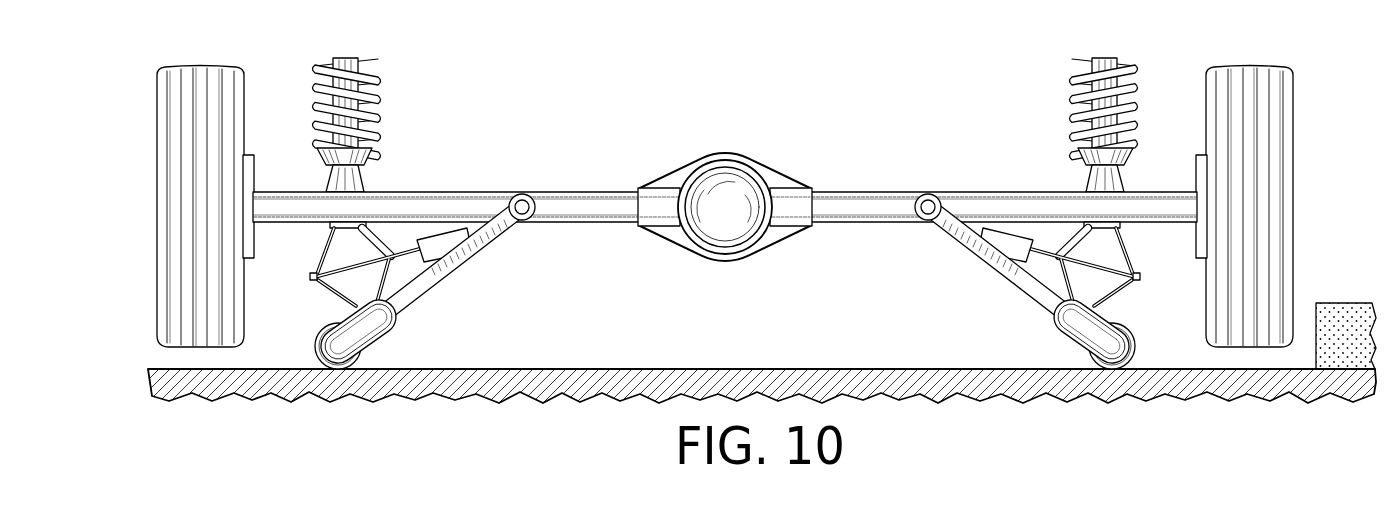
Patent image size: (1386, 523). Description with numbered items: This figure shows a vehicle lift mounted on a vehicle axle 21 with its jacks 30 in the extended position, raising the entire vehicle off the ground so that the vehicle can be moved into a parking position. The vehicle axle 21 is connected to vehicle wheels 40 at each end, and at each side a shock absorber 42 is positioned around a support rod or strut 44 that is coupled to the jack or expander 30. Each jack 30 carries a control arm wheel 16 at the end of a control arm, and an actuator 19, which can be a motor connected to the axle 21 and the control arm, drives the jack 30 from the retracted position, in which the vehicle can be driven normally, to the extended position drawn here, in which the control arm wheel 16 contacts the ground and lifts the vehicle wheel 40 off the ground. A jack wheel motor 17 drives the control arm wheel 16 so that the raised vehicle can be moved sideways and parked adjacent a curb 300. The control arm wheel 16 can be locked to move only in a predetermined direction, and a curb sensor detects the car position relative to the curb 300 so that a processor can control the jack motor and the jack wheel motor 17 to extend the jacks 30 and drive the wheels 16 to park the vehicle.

The control arm wheel 16 is at (318, 340).
The jack wheel motor 17 is at (372, 325).
The actuator 19 is at (455, 222).
The vehicle axle 21 is at (572, 190).
The jack 30 is at (400, 240).
The vehicle wheel 40 is at (158, 132).
The shock absorber 42 is at (379, 99).
The support rod 44 is at (314, 143).
The curb 300 is at (1345, 302).